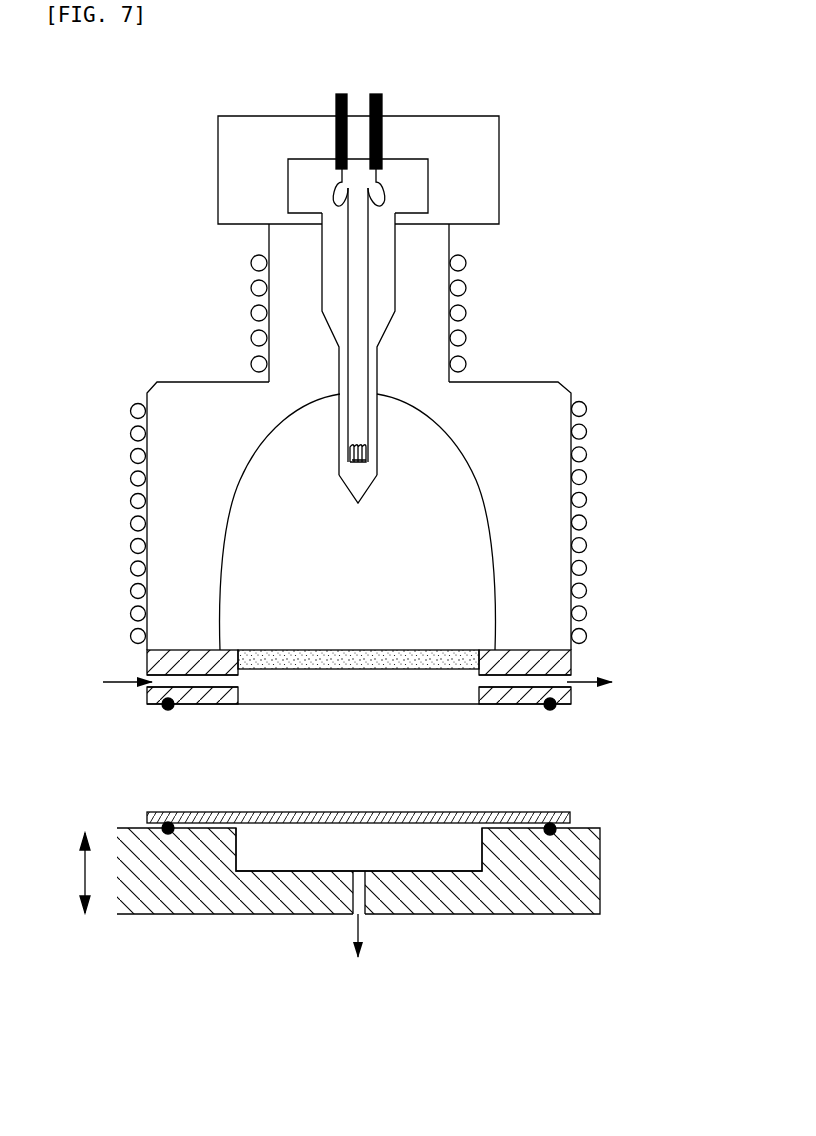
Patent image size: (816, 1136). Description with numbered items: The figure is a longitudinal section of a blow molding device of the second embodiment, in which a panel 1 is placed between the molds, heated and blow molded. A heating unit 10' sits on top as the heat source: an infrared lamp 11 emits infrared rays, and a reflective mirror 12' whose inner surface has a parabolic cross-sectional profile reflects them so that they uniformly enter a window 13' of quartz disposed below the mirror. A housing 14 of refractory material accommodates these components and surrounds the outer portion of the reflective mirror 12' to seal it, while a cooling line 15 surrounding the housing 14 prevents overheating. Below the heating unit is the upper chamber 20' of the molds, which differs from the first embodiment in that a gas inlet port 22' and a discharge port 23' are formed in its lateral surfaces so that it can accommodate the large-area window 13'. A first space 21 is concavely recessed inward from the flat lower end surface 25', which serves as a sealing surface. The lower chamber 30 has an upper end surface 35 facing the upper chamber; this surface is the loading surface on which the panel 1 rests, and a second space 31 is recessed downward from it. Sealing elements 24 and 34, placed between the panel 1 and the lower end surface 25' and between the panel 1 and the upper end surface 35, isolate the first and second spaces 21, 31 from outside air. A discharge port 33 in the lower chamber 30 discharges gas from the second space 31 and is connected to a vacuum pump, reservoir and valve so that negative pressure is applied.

The panel 1 is at (335, 815).
The heating unit 10' is at (394, 284).
The infrared lamp 11 is at (343, 485).
The reflective mirror 12' is at (435, 522).
The window 13' is at (358, 636).
The housing 14 is at (563, 397).
The cooling line 15 is at (131, 409).
The upper chamber 20' is at (380, 670).
The first space 21 is at (411, 690).
The gas inlet port 22' is at (212, 715).
The discharge port 23' is at (511, 715).
The sealing element 24 is at (166, 711).
The lower end surface 25' is at (529, 726).
The lower chamber 30 is at (612, 880).
The second space 31 is at (443, 857).
The discharge port 33 is at (360, 893).
The sealing element 34 is at (168, 836).
The upper end surface 35 is at (583, 828).